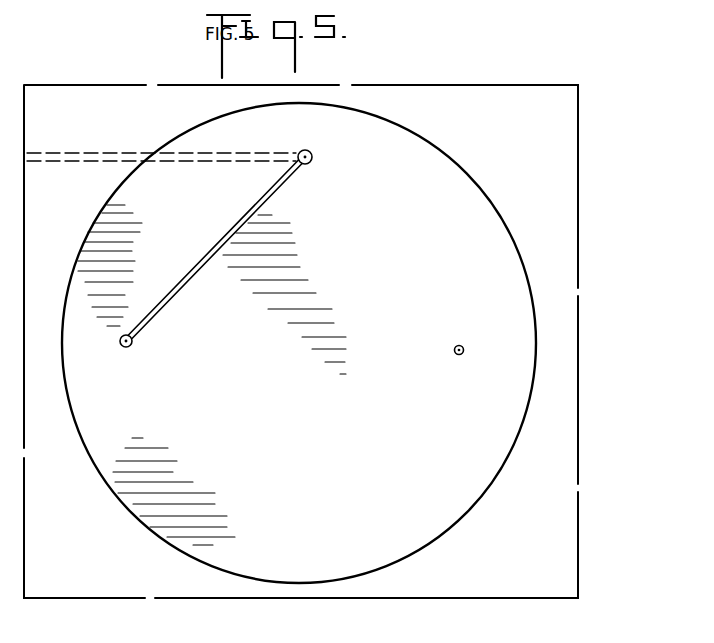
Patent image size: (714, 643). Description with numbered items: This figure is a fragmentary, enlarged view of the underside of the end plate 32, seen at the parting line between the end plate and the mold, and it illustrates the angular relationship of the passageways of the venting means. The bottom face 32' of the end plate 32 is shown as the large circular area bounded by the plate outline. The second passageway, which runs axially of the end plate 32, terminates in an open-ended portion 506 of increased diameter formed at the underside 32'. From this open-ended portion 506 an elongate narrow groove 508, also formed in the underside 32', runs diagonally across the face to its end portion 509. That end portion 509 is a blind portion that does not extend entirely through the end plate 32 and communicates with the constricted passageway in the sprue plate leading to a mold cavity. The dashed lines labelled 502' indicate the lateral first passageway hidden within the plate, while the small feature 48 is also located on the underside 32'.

The end plate 32 is at (331, 341).
The underside or bottom of the end plate 32' is at (299, 343).
The reference line 502' is at (161, 173).
The open-ended portion of increased diameter 506 is at (312, 162).
The elongate narrow groove 508 is at (210, 250).
The end portion of the elongate groove 509 is at (130, 348).
The pin 48 is at (456, 355).